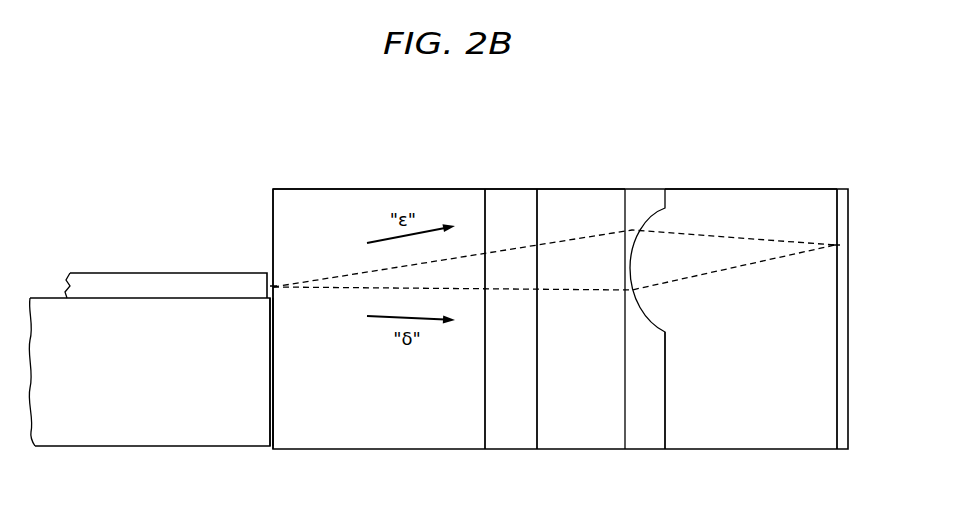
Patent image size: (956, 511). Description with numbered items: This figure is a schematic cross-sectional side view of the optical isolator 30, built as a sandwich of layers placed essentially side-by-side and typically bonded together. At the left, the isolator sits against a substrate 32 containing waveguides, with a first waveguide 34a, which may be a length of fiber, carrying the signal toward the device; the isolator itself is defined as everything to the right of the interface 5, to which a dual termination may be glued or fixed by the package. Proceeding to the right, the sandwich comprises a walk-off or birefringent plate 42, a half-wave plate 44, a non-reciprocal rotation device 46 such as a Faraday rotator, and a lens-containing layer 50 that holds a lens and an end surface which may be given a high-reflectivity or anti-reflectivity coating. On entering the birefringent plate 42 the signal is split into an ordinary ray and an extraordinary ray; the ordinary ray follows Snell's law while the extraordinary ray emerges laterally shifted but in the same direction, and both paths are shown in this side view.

The optical isolator 30 is at (449, 126).
The substrate 32 is at (160, 438).
The first waveguide 34a is at (149, 280).
The interface 5 is at (272, 373).
The walk-off or birefringent plate 42 is at (327, 191).
The half-wave plate 44 is at (510, 191).
The non-reciprocal rotation device 46 is at (581, 191).
The lens-containing layer 50 is at (744, 191).